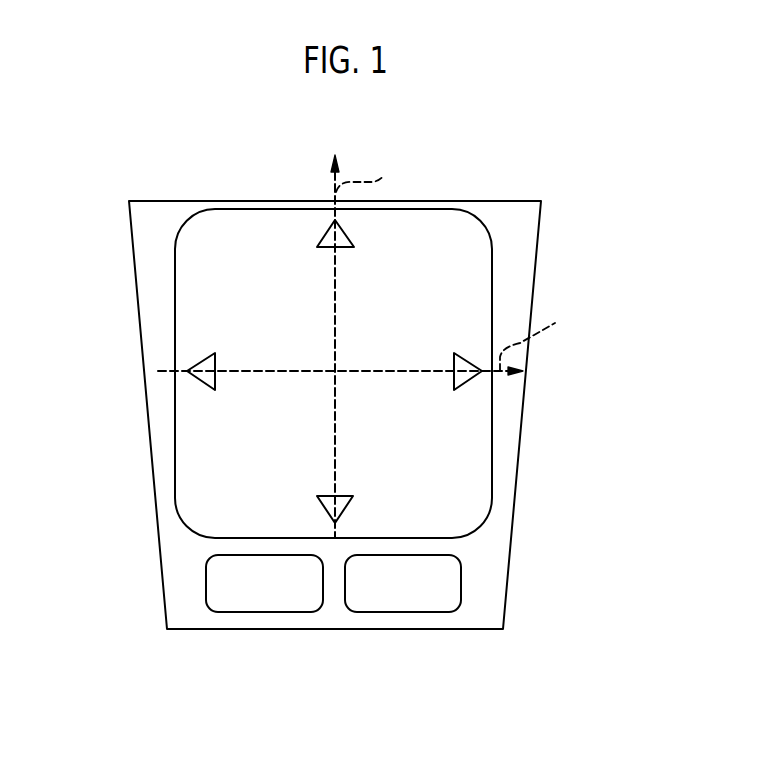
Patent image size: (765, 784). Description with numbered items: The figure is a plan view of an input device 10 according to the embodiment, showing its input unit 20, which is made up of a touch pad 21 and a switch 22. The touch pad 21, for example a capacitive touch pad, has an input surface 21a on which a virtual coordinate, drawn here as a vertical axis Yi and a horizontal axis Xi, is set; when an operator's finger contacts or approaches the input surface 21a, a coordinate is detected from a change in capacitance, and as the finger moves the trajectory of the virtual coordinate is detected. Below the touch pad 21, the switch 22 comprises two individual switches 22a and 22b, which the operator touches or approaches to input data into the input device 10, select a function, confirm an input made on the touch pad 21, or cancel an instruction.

The input device 10 is at (133, 670).
The input unit 20 is at (400, 450).
The touch pad 21 is at (371, 341).
The input surface 21a is at (416, 275).
The switch 22 is at (333, 652).
The individual switch 22a is at (273, 607).
The individual switch 22b is at (403, 627).